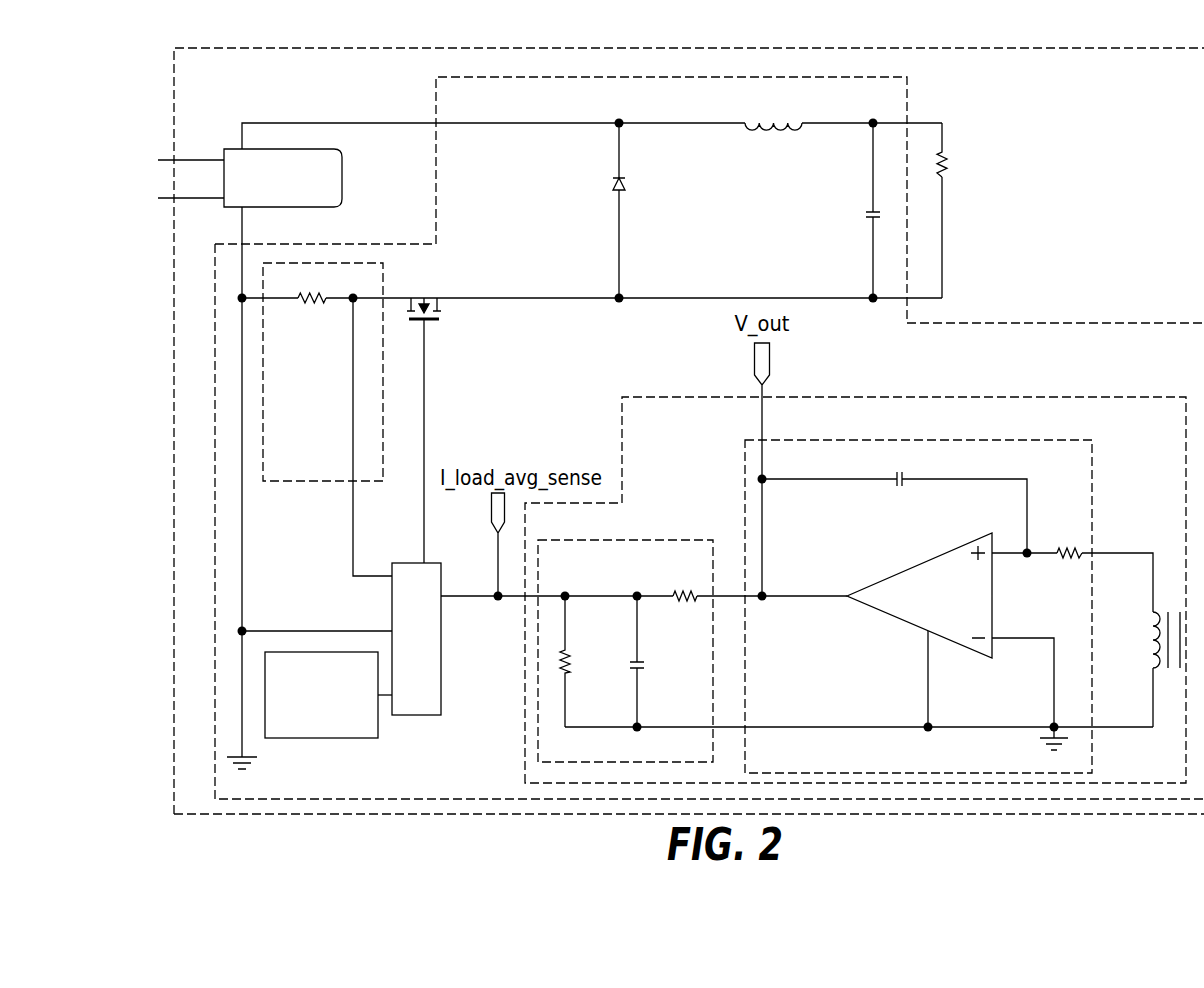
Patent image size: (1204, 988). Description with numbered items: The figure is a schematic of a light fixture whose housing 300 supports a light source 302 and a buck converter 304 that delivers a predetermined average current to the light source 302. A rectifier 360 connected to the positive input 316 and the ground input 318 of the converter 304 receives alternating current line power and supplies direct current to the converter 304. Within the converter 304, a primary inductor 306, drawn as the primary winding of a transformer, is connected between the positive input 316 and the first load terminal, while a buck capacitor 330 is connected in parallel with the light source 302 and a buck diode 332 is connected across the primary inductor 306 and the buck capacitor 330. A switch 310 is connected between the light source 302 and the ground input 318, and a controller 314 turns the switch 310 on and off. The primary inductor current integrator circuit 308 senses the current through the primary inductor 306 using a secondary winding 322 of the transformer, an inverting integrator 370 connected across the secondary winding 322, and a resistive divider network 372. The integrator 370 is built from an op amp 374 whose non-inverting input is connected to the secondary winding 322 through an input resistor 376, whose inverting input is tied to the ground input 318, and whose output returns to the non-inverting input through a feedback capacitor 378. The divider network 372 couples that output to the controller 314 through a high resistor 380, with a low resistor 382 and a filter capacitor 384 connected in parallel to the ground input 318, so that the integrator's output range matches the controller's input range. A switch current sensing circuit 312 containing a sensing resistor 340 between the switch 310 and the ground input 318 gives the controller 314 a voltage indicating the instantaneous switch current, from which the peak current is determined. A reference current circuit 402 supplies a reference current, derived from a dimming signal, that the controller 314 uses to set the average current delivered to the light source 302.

The housing 300 is at (268, 47).
The light source 302 is at (943, 152).
The buck converter 304 is at (436, 89).
The primary inductor 306 is at (765, 130).
The primary inductor current integrator circuit 308 is at (1045, 397).
The switch 310 is at (440, 298).
The switch current sensing circuit 312 is at (318, 483).
The controller 314 is at (441, 675).
The positive input 316 is at (278, 122).
The ground input 318 is at (241, 218).
The secondary winding 322 is at (1153, 663).
The buck capacitor 330 is at (868, 220).
The buck diode 332 is at (616, 190).
The sensing resistor 340 is at (303, 302).
The rectifier 360 is at (343, 180).
The inverting integrator 370 is at (1005, 440).
The resistive divider network 372 is at (620, 540).
The op amp 374 is at (897, 617).
The input resistor 376 is at (1065, 558).
The feedback capacitor 378 is at (905, 482).
The high resistor 380 is at (687, 602).
The low resistor 382 is at (570, 675).
The filter capacitor 384 is at (643, 673).
The reference current circuit 402 is at (320, 738).